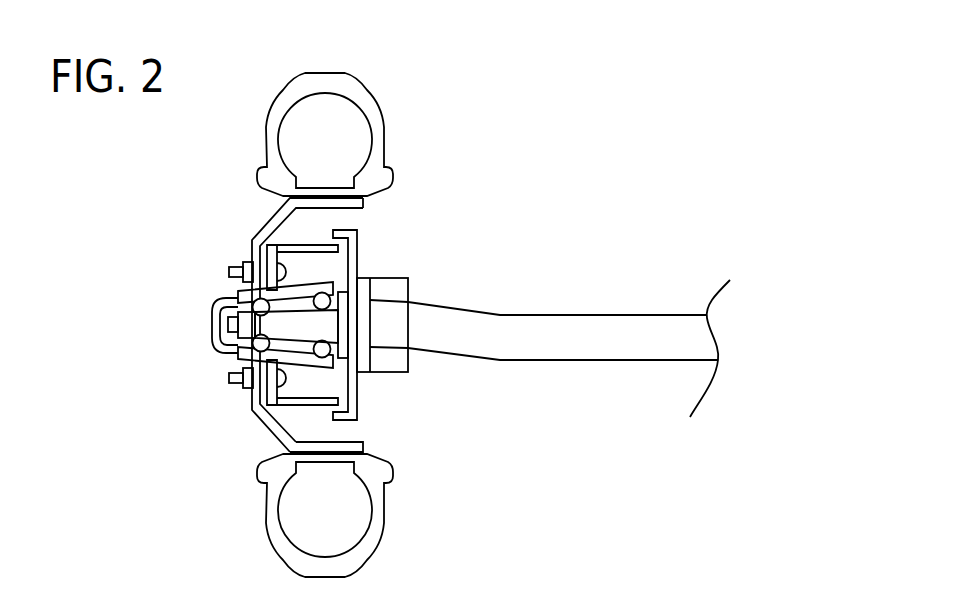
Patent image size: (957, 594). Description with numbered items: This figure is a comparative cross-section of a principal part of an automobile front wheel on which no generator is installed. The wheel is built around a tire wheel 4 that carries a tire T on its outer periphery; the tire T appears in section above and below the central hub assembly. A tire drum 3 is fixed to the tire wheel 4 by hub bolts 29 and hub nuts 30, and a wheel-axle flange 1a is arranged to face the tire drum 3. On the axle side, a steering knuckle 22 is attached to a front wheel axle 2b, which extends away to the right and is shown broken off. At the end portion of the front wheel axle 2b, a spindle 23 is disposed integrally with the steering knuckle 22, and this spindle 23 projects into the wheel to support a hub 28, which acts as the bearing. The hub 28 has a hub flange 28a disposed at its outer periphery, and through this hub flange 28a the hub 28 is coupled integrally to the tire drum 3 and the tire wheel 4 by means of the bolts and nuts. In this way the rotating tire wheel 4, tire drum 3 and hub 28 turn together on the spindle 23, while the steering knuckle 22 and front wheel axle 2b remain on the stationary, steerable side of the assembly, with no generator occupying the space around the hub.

The tire T is at (380, 116).
The tire wheel 4 is at (265, 431).
The wheel-axle flange 1a is at (364, 444).
The tire drum 3 is at (307, 245).
The hub flange 28a is at (262, 244).
The hub 28 is at (325, 282).
The spindle 23 is at (330, 330).
The hub bolt 29 is at (228, 270).
The hub nut 30 is at (250, 253).
The steering knuckle 22 is at (400, 290).
The front wheel axle 2b is at (398, 328).